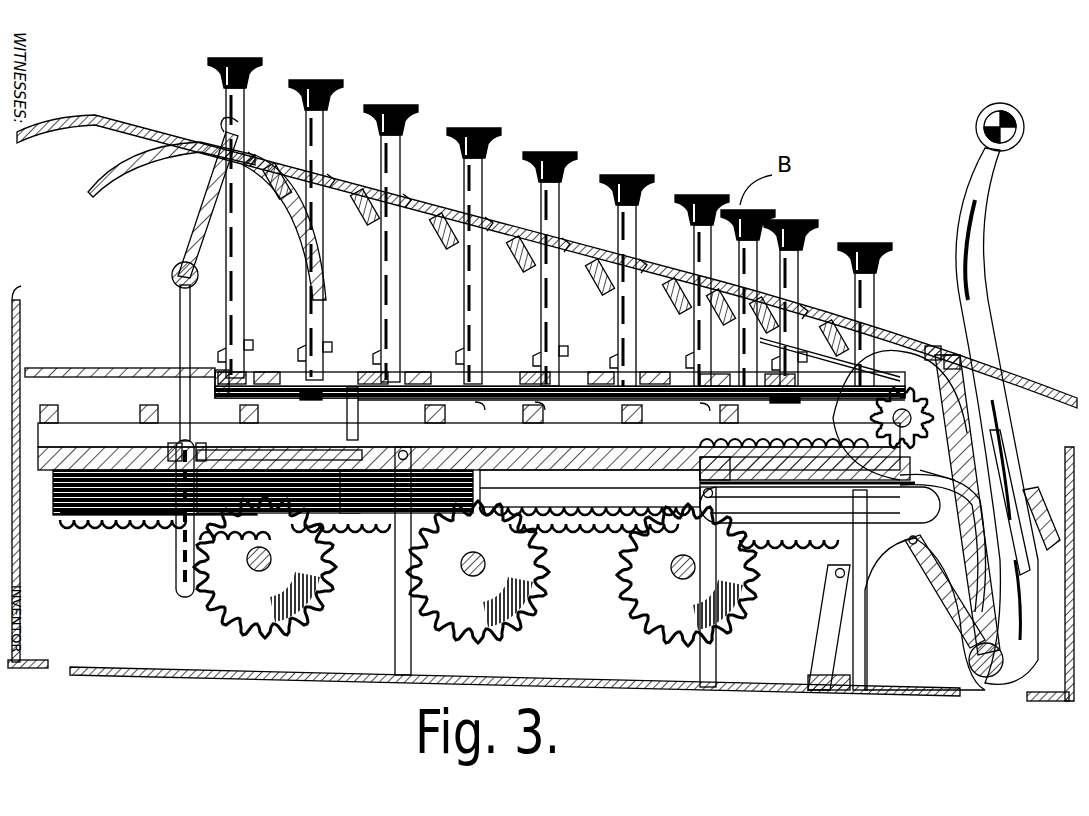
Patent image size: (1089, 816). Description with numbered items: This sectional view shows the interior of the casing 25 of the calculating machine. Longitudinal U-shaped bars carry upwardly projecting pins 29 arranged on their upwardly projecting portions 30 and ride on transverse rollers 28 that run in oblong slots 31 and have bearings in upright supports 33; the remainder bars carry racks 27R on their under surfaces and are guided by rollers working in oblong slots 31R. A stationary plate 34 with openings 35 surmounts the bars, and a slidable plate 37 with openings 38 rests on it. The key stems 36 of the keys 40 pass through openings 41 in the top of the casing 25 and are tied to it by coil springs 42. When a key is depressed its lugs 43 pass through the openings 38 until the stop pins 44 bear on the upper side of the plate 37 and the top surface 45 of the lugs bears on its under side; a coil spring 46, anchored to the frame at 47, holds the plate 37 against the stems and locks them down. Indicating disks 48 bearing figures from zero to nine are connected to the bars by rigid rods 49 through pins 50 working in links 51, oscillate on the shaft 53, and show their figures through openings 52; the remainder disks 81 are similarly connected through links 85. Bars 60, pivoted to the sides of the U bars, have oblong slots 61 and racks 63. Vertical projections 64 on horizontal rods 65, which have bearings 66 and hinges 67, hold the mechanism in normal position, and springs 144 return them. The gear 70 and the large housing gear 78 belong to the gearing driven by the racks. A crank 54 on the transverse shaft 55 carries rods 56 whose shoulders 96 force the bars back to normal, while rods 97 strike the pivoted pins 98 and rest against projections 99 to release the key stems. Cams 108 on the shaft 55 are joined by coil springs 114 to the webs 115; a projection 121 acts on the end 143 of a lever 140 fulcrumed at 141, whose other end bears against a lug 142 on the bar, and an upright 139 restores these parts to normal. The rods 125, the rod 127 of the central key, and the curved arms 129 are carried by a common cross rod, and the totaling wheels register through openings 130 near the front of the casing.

The casing 25 is at (104, 118).
The rack 27R is at (128, 533).
The rollers 28 is at (402, 450).
The pins 29 is at (140, 426).
The upwardly projecting portions 30 is at (585, 458).
The oblong slots 31 is at (272, 450).
The oblong slots 31R is at (100, 533).
The upright supports 33 is at (395, 618).
The stationary plate 34 is at (95, 368).
The openings 35 is at (492, 363).
The key stems 36 is at (306, 282).
The plate 37 is at (143, 368).
The openings 38 is at (489, 361).
The keys 40 is at (233, 50).
The openings 41 is at (305, 168).
The coil springs 42 is at (357, 226).
The lugs 43 is at (485, 344).
The stop pins 44 is at (529, 332).
The top surface 45 is at (302, 344).
The coil spring 46 is at (935, 352).
The anchorage 47 is at (950, 356).
The disks 48 is at (292, 220).
The rigid rods 49 is at (198, 212).
The pins 50 is at (173, 435).
The links 51 is at (207, 438).
The openings 52 is at (225, 128).
The shaft 53 is at (174, 268).
The crank 54 is at (975, 280).
The shaft 55 is at (1005, 665).
The rods 56 is at (943, 543).
The bars 60 is at (820, 503).
The oblong slots 61 is at (805, 497).
The racks 63 is at (790, 438).
The vertical projections 64 is at (358, 412).
The horizontal rods 65 is at (577, 410).
The bearings 66 is at (798, 425).
The hinges 67 is at (527, 408).
The gear 70 is at (218, 615).
The large gear 78 is at (338, 580).
The disks 81 is at (128, 166).
The links 85 is at (176, 570).
The shoulders 96 is at (950, 474).
The rods 97 is at (970, 440).
The pins 98 is at (1000, 390).
The projections 99 is at (945, 395).
The cams 108 is at (918, 670).
The coil springs 114 is at (815, 638).
The webs 115 is at (818, 594).
The projections 121 is at (912, 548).
The rods 125 is at (1041, 507).
The rod 127 is at (836, 360).
The curved arms 129 is at (1010, 502).
The openings 130 is at (932, 346).
The upright 139 is at (867, 607).
The lever 140 is at (805, 468).
The fulcrum 141 is at (860, 492).
The lug 142 is at (717, 467).
The end 143 is at (945, 585).
The springs 144 is at (222, 396).